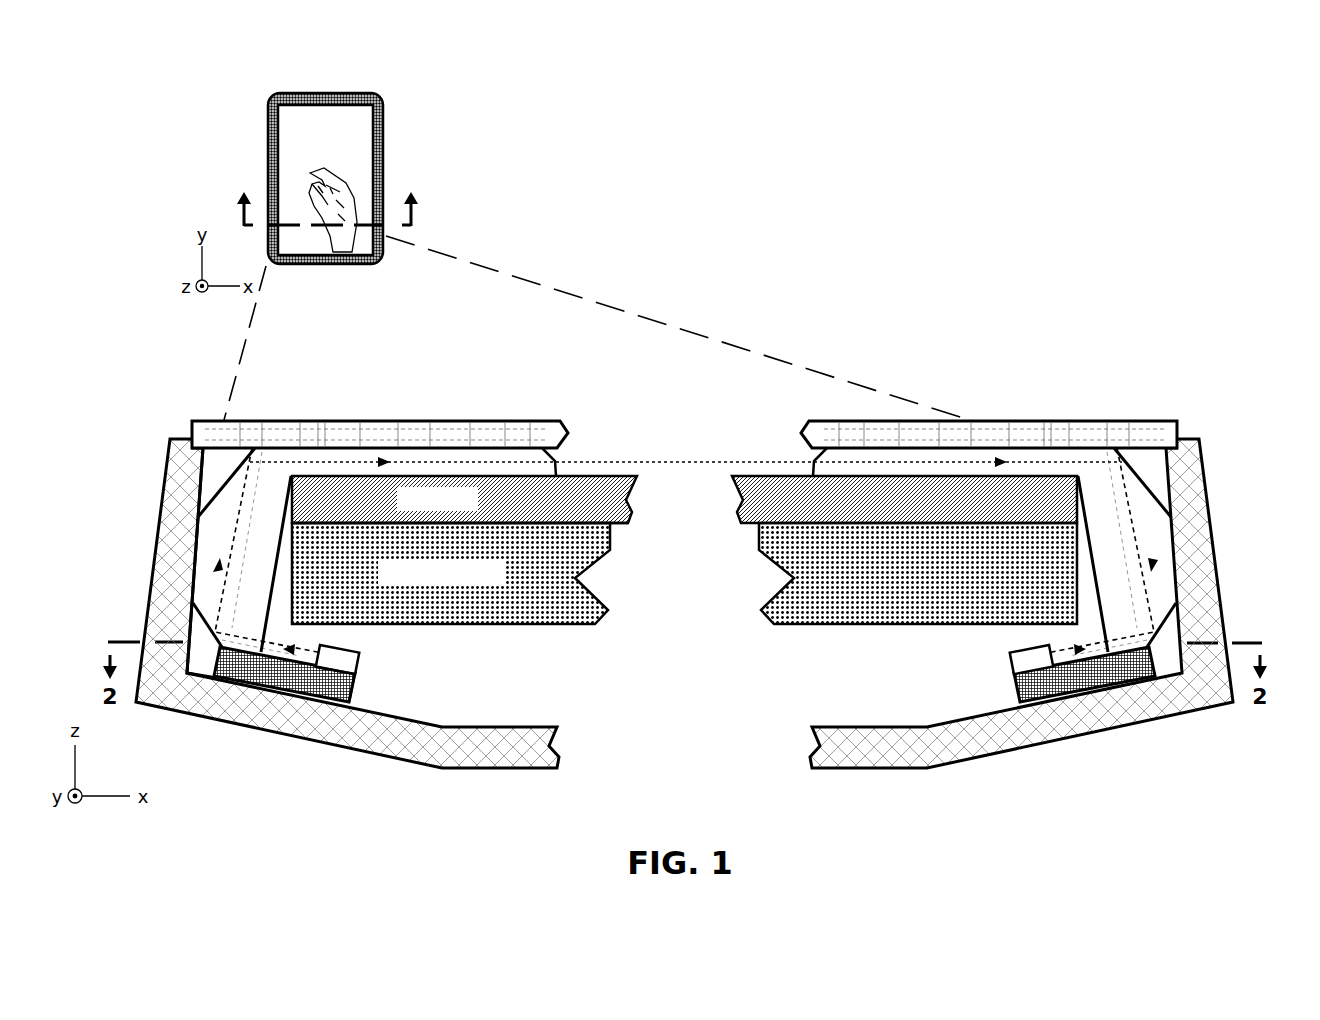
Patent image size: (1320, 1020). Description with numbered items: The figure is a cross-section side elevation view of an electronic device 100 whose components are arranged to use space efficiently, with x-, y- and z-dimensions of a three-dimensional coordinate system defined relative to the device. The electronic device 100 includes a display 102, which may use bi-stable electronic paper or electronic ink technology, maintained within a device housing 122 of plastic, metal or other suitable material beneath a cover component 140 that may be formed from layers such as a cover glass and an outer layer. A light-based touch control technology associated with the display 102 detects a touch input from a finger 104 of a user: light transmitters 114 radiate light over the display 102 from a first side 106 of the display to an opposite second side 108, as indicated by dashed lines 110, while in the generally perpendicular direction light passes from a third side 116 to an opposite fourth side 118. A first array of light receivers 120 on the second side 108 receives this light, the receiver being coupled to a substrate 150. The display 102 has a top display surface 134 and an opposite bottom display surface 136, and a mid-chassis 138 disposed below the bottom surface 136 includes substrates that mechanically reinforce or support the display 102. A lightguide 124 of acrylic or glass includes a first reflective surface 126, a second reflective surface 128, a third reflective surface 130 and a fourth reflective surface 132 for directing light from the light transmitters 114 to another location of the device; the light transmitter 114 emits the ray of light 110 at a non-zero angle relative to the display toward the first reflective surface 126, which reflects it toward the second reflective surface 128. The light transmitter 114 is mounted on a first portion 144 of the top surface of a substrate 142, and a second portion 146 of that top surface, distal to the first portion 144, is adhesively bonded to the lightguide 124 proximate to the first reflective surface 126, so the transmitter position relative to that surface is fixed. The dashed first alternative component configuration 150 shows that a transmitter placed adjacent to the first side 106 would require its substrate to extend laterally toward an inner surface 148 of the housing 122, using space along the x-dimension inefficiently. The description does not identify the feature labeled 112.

The electronic device 100 is at (418, 108).
The display 102 is at (633, 500).
The finger 104 is at (327, 177).
The first side of the display 106 is at (278, 181).
The second side of the display 108 is at (375, 181).
The dashed lines 110 is at (188, 568).
The housing side wall 112 is at (1160, 545).
The light transmitters 114 is at (360, 650).
The third side of the display 116 is at (330, 93).
The fourth side of the display 118 is at (327, 258).
The light receivers 120 is at (1013, 646).
The device housing 122 is at (212, 515).
The lightguide 124 is at (176, 446).
The first reflective surface 126 is at (200, 605).
The second reflective surface 128 is at (223, 512).
The third reflective surface 130 is at (1143, 473).
The fourth reflective surface 132 is at (1178, 700).
The top display surface 134 is at (582, 475).
The bottom display surface 136 is at (580, 525).
The mid-chassis 138 is at (497, 624).
The cover component 140 is at (415, 420).
The substrate 142 is at (362, 680).
The first portion of the top surface of the substrate 144 is at (338, 680).
The second portion of the top surface of the substrate 146 is at (242, 650).
The inner surface of the housing 148 is at (193, 603).
The substrate 150 is at (252, 518).